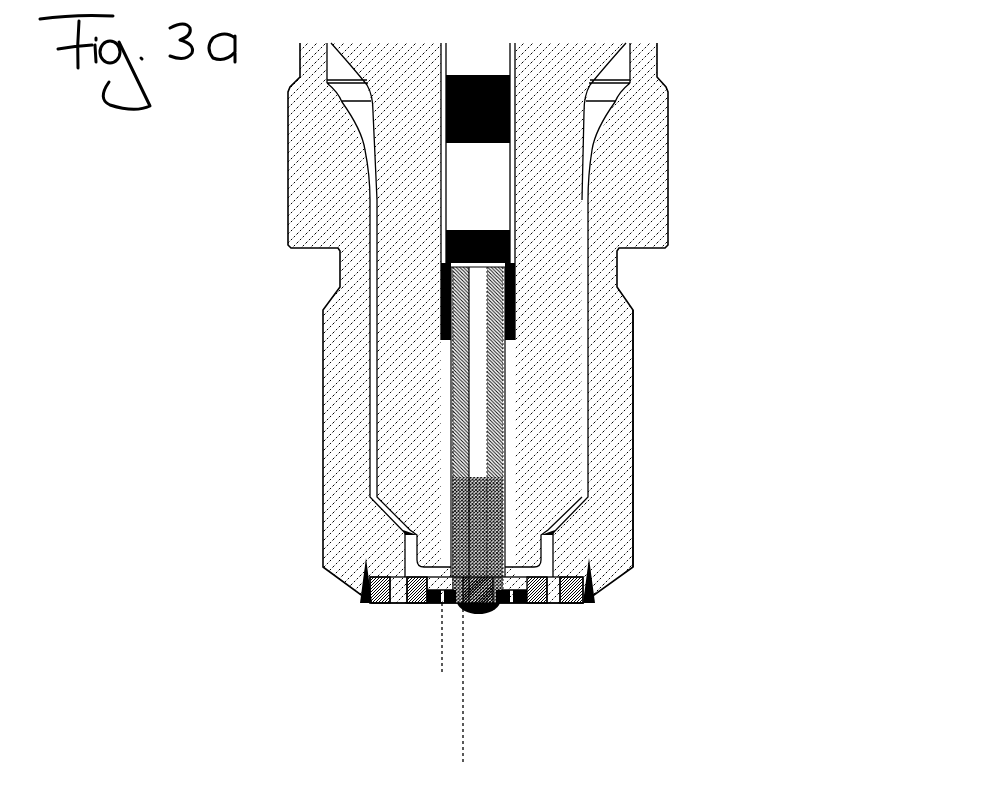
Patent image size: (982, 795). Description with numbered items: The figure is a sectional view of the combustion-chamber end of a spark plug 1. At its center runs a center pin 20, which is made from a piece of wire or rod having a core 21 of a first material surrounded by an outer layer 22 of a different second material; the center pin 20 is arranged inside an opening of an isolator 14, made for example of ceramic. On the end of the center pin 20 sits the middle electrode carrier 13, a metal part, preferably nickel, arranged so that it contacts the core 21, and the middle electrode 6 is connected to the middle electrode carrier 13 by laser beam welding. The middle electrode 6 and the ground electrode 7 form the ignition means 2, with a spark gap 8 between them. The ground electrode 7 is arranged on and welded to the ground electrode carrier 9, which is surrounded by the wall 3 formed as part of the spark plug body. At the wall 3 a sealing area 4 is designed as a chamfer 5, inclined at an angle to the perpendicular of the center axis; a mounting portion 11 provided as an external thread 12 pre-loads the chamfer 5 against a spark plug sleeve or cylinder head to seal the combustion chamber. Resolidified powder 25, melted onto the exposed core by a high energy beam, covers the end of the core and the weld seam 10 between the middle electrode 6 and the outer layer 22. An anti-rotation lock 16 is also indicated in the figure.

The spark plug 1 is at (536, 419).
The ignition means 2 is at (383, 623).
The wall 3 is at (620, 530).
The sealing area 4 is at (314, 623).
The chamfer 5 is at (333, 592).
The middle electrode 6 is at (500, 607).
The ground electrode 7 is at (520, 603).
The spark gap 8 is at (447, 674).
The ground electrode carrier 9 is at (577, 603).
The weld seam 10 is at (597, 593).
The mounting portion 11 is at (744, 407).
The external thread 12 is at (645, 342).
The middle electrode carrier 13 is at (467, 612).
The isolator 14 is at (540, 260).
The anti-rotation lock 16 is at (512, 343).
The center pin 20 is at (507, 487).
The core 21 is at (482, 447).
The outer layer 22 is at (495, 408).
The (re-)solidified powder 25 is at (471, 699).